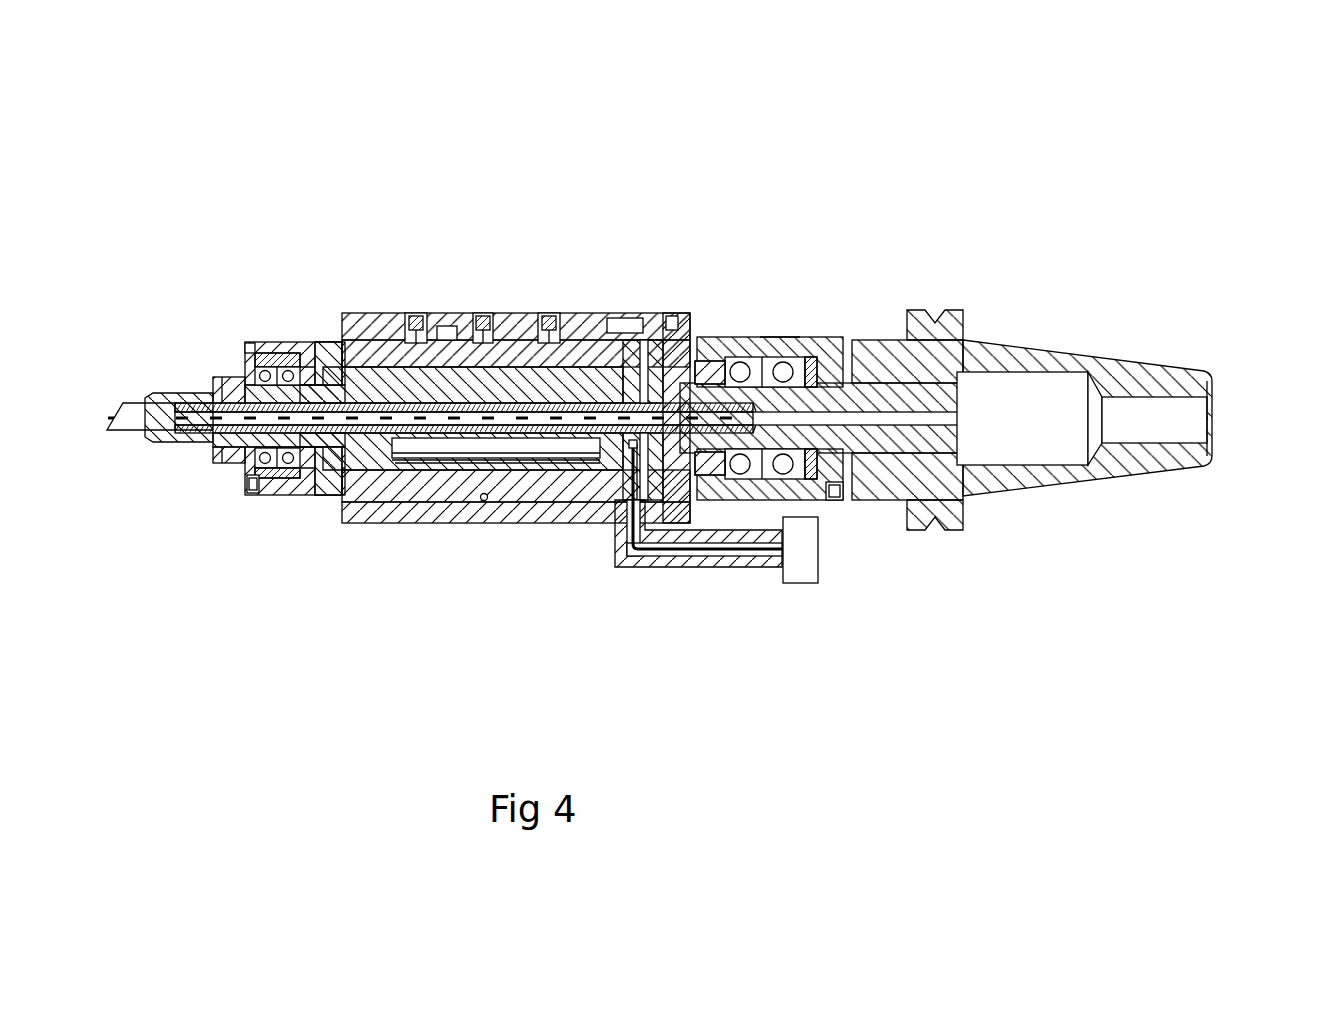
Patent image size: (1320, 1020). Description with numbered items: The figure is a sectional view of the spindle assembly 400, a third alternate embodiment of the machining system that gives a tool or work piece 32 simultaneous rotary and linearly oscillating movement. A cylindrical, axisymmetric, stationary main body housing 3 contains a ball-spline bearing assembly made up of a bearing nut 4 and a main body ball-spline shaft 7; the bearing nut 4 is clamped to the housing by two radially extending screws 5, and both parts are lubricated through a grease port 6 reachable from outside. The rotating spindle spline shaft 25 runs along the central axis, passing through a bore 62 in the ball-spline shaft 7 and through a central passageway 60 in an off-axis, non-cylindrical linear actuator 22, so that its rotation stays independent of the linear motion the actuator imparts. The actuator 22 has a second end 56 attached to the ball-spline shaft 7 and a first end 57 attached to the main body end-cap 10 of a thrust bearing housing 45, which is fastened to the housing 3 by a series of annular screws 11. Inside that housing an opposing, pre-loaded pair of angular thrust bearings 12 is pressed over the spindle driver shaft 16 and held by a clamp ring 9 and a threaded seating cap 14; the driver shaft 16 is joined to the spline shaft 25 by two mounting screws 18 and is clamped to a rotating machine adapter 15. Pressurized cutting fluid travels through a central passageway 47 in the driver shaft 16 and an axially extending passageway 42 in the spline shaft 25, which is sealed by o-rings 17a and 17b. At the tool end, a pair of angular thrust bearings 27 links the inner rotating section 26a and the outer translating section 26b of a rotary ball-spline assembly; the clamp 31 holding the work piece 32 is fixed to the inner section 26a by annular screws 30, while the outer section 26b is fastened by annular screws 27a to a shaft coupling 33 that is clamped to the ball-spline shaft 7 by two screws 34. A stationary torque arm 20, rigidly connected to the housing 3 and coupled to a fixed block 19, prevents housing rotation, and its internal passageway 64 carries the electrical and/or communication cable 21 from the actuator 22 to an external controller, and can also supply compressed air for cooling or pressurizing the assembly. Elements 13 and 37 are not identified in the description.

The spindle assembly 400 is at (1030, 134).
The main body housing 3 is at (553, 313).
The bearing nut 4 is at (376, 332).
The radially extending screws 5 is at (412, 313).
The grease port 6 is at (478, 313).
The main body ball-spline shaft 7 is at (588, 313).
The clamp ring 9 is at (693, 313).
The main body end-cap 10 is at (653, 313).
The annular screws 11 is at (628, 313).
The angular thrust bearings 12 is at (730, 336).
The spacer ring 13 is at (826, 340).
The seating cap 14 is at (868, 342).
The machine adapter 15 is at (934, 322).
The spindle driver shaft 16 is at (942, 510).
The o-ring 17a is at (838, 498).
The o-ring 17b is at (238, 462).
The mounting screws 18 is at (692, 560).
The fixed block 19 is at (812, 572).
The torque arm 20 is at (742, 568).
The electrical and/or communication cable 21 is at (716, 556).
The linear actuator 22 is at (584, 520).
The rotating spindle spline shaft 25 is at (488, 502).
The inner rotating section 26a is at (248, 392).
The outer translating section 26b is at (282, 360).
The angular thrust bearings 27 is at (247, 352).
The annular screws 27a is at (285, 495).
The annular screws 30 is at (213, 382).
The clamp 31 is at (213, 388).
The tool or work piece 32 is at (162, 452).
The shaft coupling 33 is at (298, 345).
The screws 34 is at (334, 345).
The tool holder taper 37 is at (1243, 367).
The axially extending passageway 42 is at (533, 313).
The thrust bearing housing 45 is at (776, 334).
The central passageway 47 is at (945, 398).
The second end 56 is at (408, 500).
The first end 57 is at (643, 540).
The central passageway 60 is at (478, 498).
The bore 62 is at (447, 313).
The internal passageway 64 is at (758, 556).